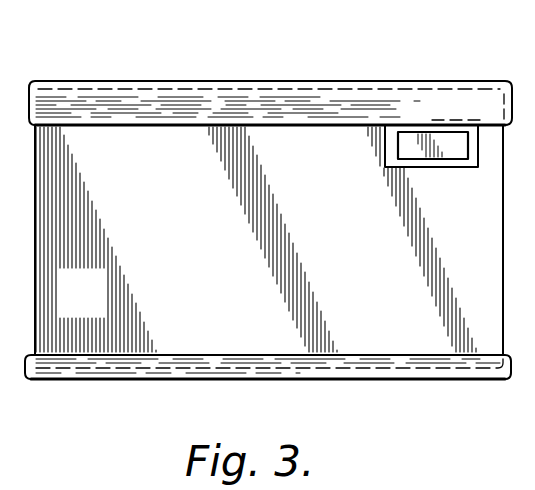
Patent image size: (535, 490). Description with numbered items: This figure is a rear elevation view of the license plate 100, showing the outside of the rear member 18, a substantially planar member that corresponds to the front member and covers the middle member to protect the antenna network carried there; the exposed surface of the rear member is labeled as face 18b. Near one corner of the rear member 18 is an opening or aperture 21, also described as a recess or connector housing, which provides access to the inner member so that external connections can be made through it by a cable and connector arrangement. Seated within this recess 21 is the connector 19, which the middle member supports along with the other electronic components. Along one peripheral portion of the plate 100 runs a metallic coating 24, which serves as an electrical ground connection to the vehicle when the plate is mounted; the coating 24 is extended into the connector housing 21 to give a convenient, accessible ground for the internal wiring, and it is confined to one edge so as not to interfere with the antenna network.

The license plate 100 is at (306, 42).
The metallic coating 24 is at (198, 80).
The rear member 18 is at (78, 337).
The front cover surface 18b is at (100, 308).
The connector 19 is at (413, 143).
The recess 21 is at (418, 167).